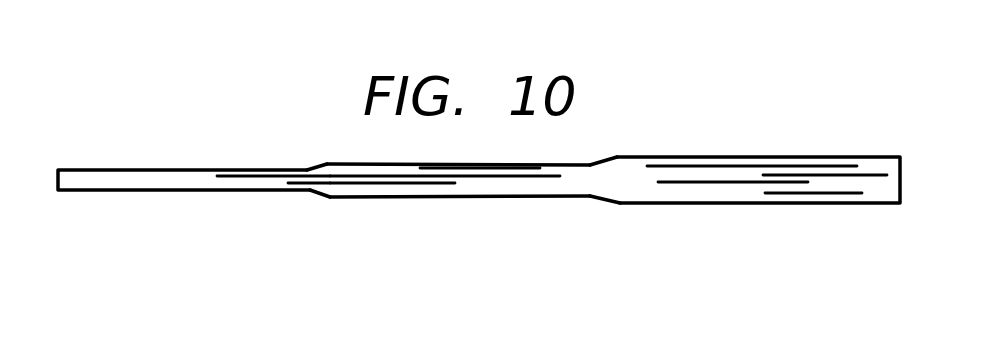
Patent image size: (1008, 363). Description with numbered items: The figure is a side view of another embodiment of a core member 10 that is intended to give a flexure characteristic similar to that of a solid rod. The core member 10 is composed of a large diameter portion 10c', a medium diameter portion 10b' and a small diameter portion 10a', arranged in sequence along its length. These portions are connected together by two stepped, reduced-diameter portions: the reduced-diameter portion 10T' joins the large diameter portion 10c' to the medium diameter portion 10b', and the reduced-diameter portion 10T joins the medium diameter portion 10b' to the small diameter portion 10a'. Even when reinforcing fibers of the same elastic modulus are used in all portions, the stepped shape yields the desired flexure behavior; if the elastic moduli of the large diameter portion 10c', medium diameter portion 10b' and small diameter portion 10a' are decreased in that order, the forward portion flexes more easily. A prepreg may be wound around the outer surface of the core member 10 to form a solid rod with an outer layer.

The core member 10 is at (479, 245).
The small diameter portion 10a' is at (194, 220).
The reduced-diameter portion 10T is at (316, 217).
The medium diameter portion 10b' is at (458, 217).
The reduced-diameter portion 10T' is at (604, 214).
The large diameter portion 10c' is at (758, 214).